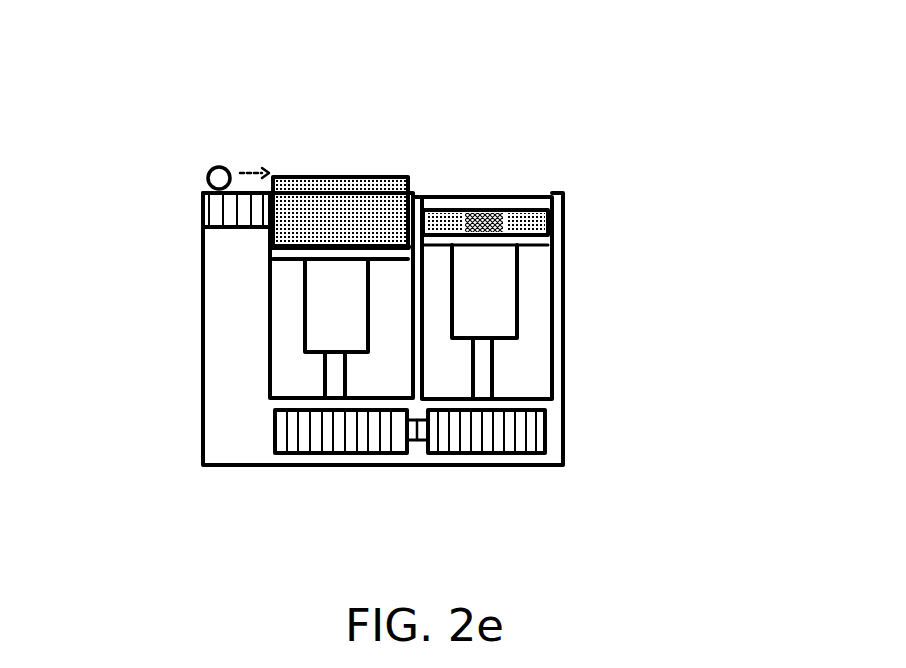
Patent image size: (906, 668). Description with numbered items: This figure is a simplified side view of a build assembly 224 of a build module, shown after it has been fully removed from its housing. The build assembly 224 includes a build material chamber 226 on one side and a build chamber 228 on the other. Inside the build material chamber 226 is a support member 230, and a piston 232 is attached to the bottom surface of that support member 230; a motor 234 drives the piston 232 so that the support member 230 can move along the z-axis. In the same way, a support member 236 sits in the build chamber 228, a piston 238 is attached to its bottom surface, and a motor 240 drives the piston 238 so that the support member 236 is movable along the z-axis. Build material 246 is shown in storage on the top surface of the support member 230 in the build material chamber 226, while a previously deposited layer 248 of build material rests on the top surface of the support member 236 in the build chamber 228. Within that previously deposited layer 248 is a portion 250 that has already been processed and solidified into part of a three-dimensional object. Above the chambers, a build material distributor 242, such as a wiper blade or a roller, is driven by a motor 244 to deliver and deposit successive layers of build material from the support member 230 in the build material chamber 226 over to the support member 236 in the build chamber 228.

The build assembly 224 is at (383, 232).
The build material chamber 226 is at (341, 218).
The build chamber 228 is at (485, 153).
The support member 230 is at (260, 338).
The piston 232 is at (245, 377).
The motor 234 is at (351, 499).
The support member 236 is at (583, 298).
The piston 238 is at (589, 322).
The motor 240 is at (494, 499).
The build material distributor 242 is at (207, 109).
The motor 244 is at (170, 273).
The build material 246 is at (340, 179).
The previously deposited layer 248 is at (564, 186).
The portion 250 is at (532, 149).